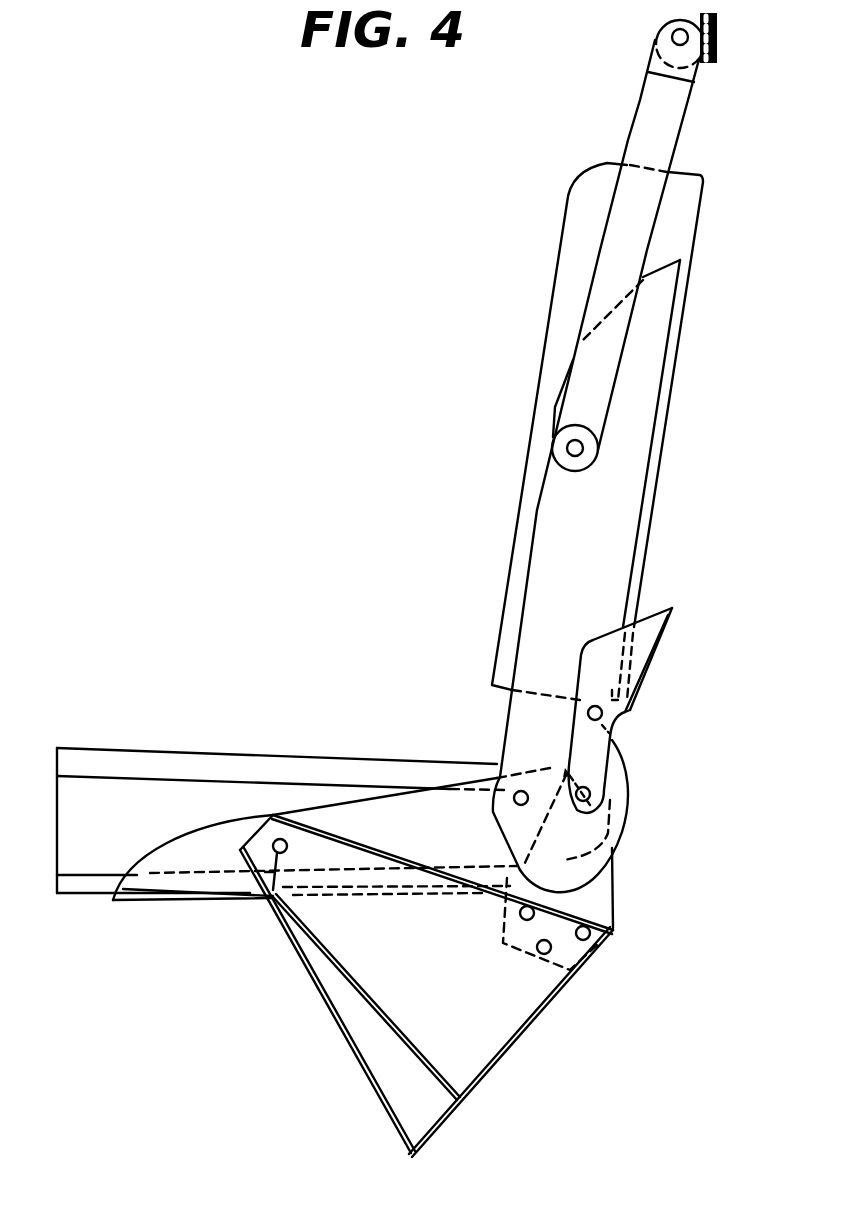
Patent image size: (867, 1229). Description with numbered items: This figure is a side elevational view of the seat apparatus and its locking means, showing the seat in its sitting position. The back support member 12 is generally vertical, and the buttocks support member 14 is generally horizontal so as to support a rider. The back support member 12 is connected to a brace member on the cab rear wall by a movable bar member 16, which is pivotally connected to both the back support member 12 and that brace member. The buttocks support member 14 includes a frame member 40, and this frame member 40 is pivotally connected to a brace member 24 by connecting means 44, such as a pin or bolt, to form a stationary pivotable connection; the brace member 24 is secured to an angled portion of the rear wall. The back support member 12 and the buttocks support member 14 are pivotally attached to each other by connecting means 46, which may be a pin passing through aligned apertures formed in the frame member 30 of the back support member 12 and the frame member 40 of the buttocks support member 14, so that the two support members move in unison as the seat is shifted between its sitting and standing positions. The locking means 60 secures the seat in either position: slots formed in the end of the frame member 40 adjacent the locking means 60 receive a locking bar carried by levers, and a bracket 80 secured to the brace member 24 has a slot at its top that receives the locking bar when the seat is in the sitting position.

The back support member 12 is at (672, 413).
The buttocks support member 14 is at (142, 737).
The bar member 16 is at (672, 138).
The brace member 24 is at (493, 1023).
The frame member 30 is at (622, 518).
The frame member 40 is at (75, 810).
The connecting means 44 is at (273, 900).
The connecting means 46 is at (520, 790).
The locking means 60 is at (632, 730).
The bracket 80 is at (598, 893).